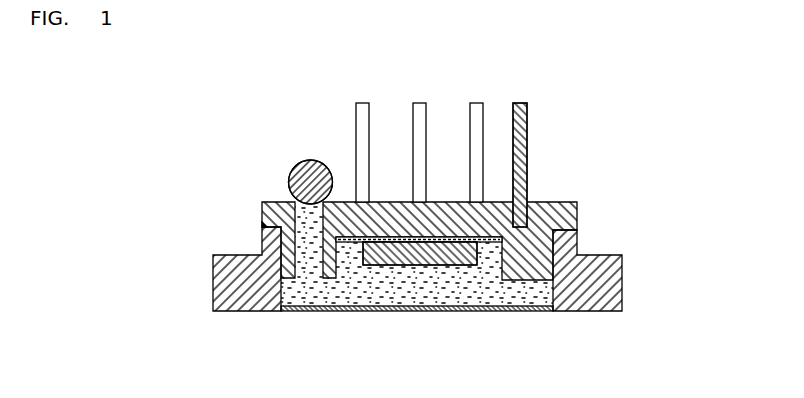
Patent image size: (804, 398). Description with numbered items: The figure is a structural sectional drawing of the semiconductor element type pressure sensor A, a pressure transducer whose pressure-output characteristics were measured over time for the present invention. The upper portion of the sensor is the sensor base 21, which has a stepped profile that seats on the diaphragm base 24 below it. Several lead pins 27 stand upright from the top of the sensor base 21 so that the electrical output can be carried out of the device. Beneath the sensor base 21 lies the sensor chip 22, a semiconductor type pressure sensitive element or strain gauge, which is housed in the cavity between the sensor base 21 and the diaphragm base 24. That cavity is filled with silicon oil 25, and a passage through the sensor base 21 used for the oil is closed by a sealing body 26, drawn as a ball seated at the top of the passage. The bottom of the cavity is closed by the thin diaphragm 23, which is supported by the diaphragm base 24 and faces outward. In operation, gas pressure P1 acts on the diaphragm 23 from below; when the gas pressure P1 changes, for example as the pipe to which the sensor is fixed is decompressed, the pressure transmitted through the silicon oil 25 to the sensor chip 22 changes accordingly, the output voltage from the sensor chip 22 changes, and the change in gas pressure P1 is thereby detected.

The sensor base 21 is at (548, 201).
The sensor chip 22 is at (427, 253).
The diaphragm 23 is at (467, 313).
The diaphragm base 24 is at (622, 289).
The silicon oil 25 is at (478, 288).
The sealing body 26 is at (308, 172).
The lead pin 27 is at (420, 120).
The pressure sensor A is at (548, 136).
The gas pressure P1 is at (418, 313).